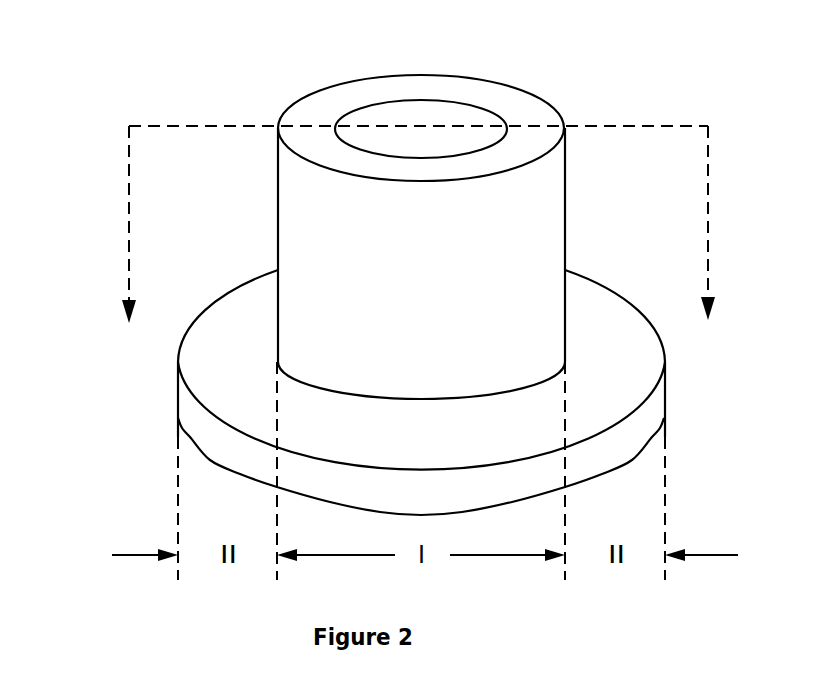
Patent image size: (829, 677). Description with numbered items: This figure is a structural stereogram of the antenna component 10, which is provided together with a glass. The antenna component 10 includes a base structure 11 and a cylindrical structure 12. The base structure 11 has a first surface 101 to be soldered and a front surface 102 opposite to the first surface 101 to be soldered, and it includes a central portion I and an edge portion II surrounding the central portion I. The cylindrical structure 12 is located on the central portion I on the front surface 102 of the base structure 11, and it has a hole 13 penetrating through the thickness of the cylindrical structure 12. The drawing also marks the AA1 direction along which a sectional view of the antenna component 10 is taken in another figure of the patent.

The antenna component 10 is at (113, 83).
The base structure 11 is at (195, 412).
The cylindrical structure 12 is at (320, 235).
The hole 13 is at (443, 135).
The first surface to be soldered 101 is at (614, 481).
The front surface 102 is at (617, 329).